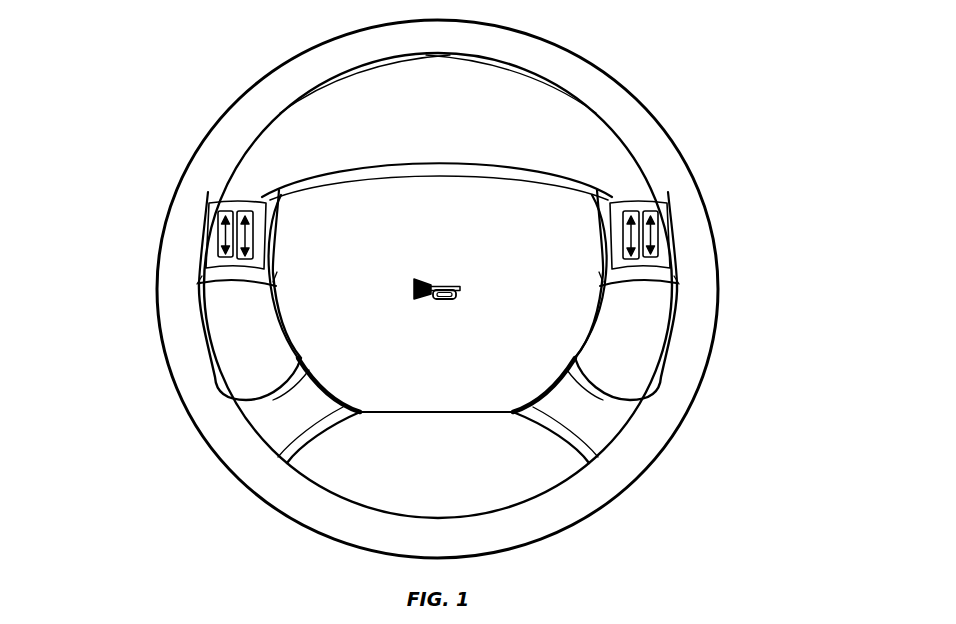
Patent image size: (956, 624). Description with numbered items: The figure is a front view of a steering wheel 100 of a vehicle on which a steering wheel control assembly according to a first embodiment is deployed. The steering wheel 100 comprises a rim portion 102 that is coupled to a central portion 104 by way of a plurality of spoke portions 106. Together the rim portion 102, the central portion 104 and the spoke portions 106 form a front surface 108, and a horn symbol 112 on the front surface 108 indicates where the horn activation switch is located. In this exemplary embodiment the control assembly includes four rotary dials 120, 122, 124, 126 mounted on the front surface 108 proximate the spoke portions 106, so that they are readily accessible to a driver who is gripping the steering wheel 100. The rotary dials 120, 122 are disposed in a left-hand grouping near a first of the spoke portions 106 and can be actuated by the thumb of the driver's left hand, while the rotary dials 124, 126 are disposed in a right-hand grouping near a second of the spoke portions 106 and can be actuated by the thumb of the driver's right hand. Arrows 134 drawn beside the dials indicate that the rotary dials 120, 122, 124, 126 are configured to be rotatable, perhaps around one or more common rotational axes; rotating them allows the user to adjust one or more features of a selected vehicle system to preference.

The steering wheel 100 is at (732, 51).
The rim portion 102 is at (700, 173).
The central portion 104 is at (491, 170).
The spoke portions 106 is at (216, 193).
The front surface 108 is at (457, 233).
The horn symbol 112 is at (456, 297).
The rotary dial 120 is at (188, 259).
The rotary dial 122 is at (243, 262).
The rotary dial 124 is at (633, 262).
The rotary dial 126 is at (689, 259).
The arrows 134 is at (217, 235).